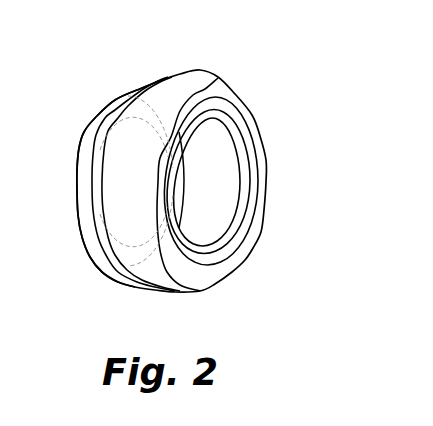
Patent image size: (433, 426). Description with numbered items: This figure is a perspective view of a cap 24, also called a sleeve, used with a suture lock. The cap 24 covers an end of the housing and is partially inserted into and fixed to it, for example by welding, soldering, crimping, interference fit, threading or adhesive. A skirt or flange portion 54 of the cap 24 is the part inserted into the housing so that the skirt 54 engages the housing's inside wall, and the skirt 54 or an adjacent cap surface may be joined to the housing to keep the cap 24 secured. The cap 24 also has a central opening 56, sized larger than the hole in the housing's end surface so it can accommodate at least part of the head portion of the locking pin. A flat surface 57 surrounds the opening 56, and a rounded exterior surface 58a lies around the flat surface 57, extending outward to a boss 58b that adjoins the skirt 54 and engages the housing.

The cap 24 is at (252, 88).
The skirt or flange portion 54 is at (79, 156).
The central opening 56 is at (148, 181).
The flat surface 57 is at (218, 258).
The rounded exterior surface 58a is at (187, 88).
The boss 58b is at (141, 87).